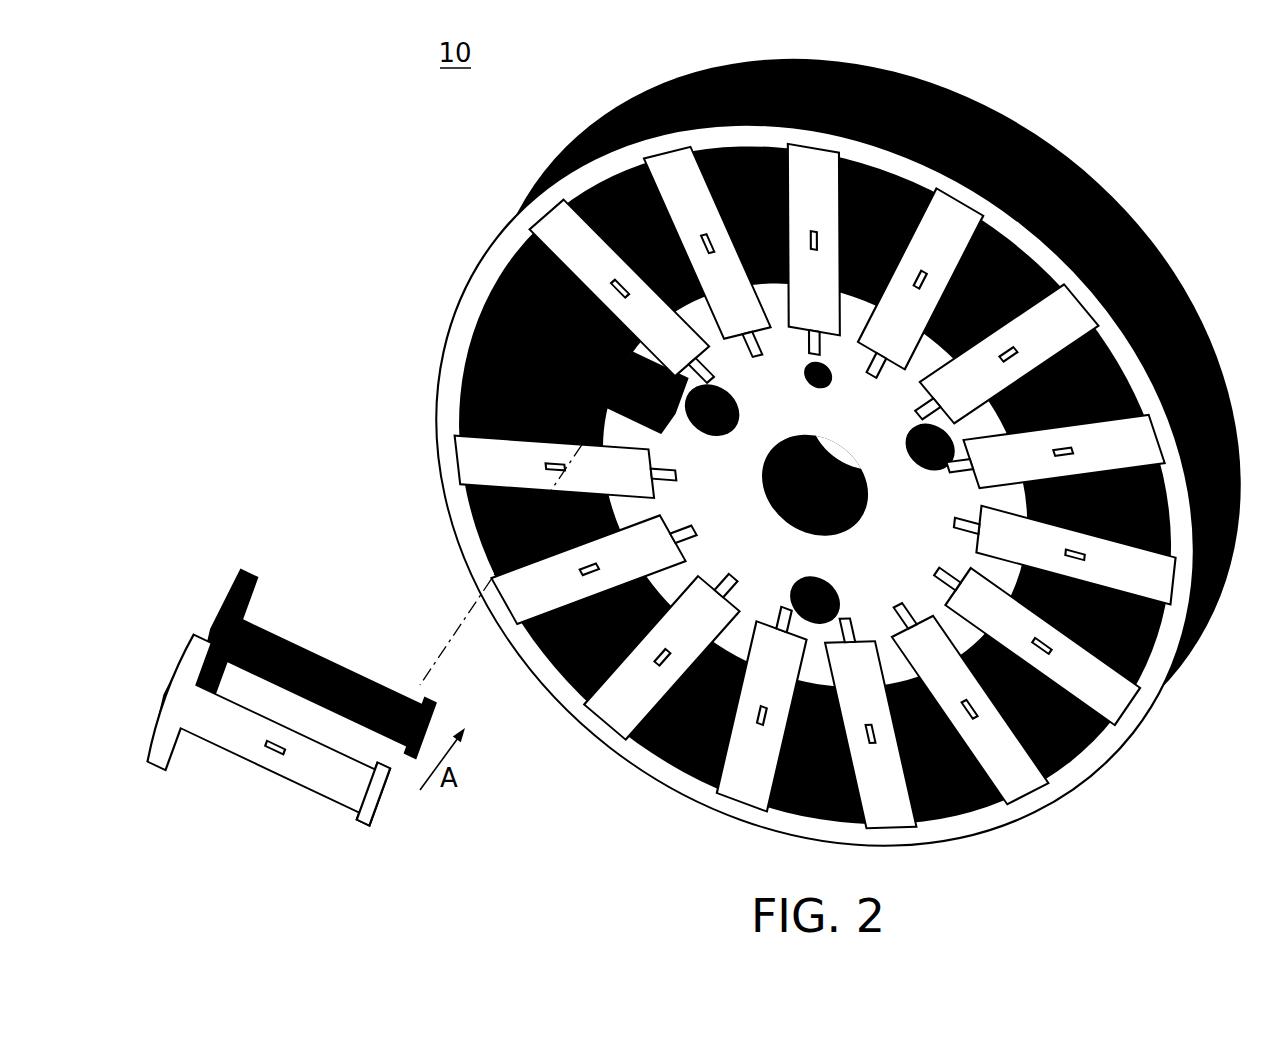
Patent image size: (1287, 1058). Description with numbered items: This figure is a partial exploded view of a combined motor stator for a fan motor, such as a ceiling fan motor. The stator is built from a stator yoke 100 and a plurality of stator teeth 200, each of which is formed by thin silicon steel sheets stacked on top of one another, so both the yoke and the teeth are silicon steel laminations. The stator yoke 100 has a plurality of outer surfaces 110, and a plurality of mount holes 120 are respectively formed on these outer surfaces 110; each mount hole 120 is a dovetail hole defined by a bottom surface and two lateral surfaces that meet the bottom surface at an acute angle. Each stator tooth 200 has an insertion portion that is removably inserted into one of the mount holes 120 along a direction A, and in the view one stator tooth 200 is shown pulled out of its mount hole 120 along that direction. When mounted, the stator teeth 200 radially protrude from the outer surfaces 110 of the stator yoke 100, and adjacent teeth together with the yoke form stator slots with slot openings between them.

The stator yoke 100 is at (787, 387).
The outer surfaces 110 is at (628, 335).
The mount holes 120 is at (617, 383).
The stator teeth 200 is at (294, 713).